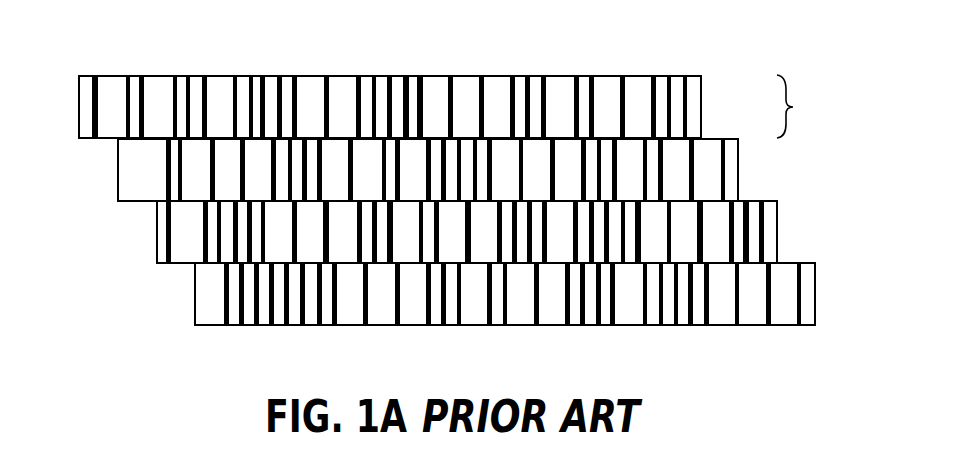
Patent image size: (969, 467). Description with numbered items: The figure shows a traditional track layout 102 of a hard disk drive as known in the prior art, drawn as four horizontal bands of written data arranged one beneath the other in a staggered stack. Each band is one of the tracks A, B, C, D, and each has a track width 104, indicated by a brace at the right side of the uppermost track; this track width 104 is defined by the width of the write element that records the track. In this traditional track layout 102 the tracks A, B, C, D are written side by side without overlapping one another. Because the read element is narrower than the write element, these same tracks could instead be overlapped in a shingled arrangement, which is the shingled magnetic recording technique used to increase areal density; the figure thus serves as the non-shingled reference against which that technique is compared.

The traditional track layout 102 is at (426, 169).
The track widths 104 is at (818, 106).
The track A is at (369, 107).
The track B is at (412, 170).
The track C is at (451, 232).
The track D is at (487, 294).